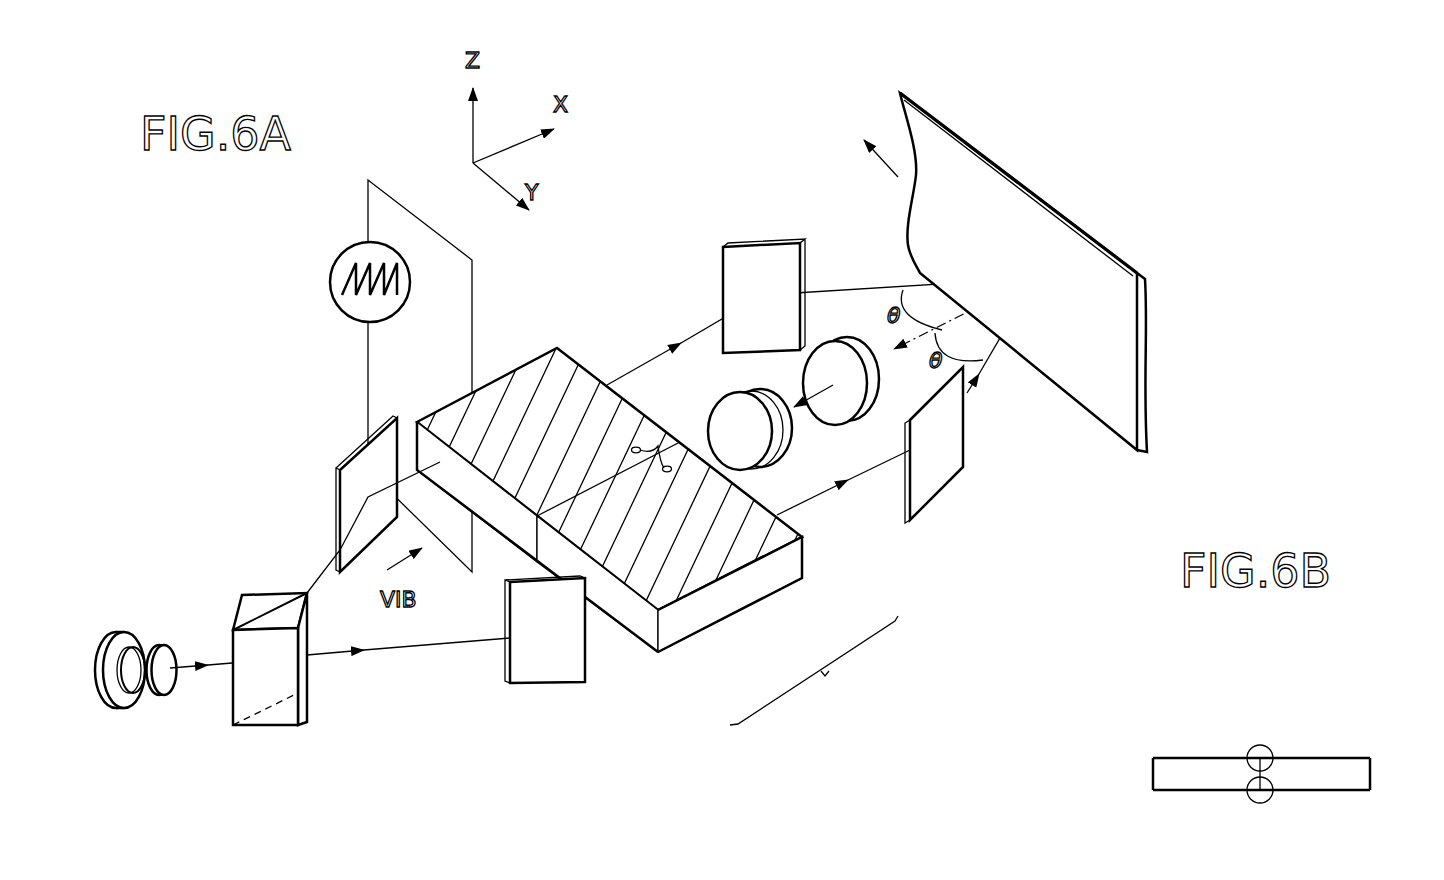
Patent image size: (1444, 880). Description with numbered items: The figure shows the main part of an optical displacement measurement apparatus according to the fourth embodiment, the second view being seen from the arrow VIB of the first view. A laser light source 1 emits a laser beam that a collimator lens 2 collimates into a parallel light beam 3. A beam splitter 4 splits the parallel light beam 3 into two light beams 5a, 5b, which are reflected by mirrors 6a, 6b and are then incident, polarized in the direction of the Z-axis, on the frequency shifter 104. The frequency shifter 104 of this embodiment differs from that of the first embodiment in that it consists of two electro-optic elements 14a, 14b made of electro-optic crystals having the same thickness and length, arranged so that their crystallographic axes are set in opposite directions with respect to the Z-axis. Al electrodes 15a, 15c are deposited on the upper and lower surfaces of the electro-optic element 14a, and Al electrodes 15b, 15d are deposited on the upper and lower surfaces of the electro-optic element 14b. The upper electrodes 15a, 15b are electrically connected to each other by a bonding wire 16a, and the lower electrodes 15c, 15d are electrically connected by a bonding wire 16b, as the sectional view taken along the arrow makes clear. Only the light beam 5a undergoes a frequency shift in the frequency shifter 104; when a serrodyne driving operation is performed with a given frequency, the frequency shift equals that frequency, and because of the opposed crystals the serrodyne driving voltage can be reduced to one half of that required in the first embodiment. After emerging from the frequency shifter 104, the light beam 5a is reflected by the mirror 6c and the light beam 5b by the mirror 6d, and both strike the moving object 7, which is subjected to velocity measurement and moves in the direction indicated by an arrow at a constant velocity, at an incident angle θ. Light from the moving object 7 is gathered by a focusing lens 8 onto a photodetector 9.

In FIG. 6A, the laser light source 1 is at (135, 637).
In FIG. 6A, the collimator lens 2 is at (168, 693).
In FIG. 6A, the parallel light beam 3 is at (197, 663).
In FIG. 6A, the beam splitter 4 is at (262, 603).
In FIG. 6A, the light beam 5a is at (330, 553).
In FIG. 6A, the light beam 5b is at (417, 650).
In FIG. 6A, the mirror 6a is at (357, 450).
In FIG. 6A, the mirror 6b is at (547, 673).
In FIG. 6A, the mirror 6c is at (757, 258).
In FIG. 6A, the mirror 6d is at (938, 455).
In FIG. 6A, the moving object 7 is at (993, 187).
In FIG. 6A, the focusing lens 8 is at (847, 407).
In FIG. 6A, the photodetector 9 is at (725, 413).
In FIG. 6A, the electro-optic element 14a is at (420, 438).
In FIG. 6B, the electro-optic element 14a is at (1167, 773).
In FIG. 6A, the electro-optic element 14b is at (708, 590).
In FIG. 6B, the electro-optic element 14b is at (1360, 770).
In FIG. 6A, the Al electrode 15a is at (528, 367).
In FIG. 6B, the Al electrode 15a is at (1167, 757).
In FIG. 6A, the Al electrode 15b is at (777, 570).
In FIG. 6B, the Al electrode 15b is at (1332, 757).
In FIG. 6A, the Al electrode 15c is at (460, 478).
In FIG. 6B, the Al electrode 15c is at (1173, 793).
In FIG. 6A, the Al electrode 15d is at (690, 640).
In FIG. 6B, the Al electrode 15d is at (1332, 793).
In FIG. 6A, the bonding wire 16a is at (657, 440).
In FIG. 6B, the bonding wire 16a is at (1260, 753).
In FIG. 6B, the bonding wire 16b is at (1260, 797).
In FIG. 6A, the frequency shifter 104 is at (814, 670).